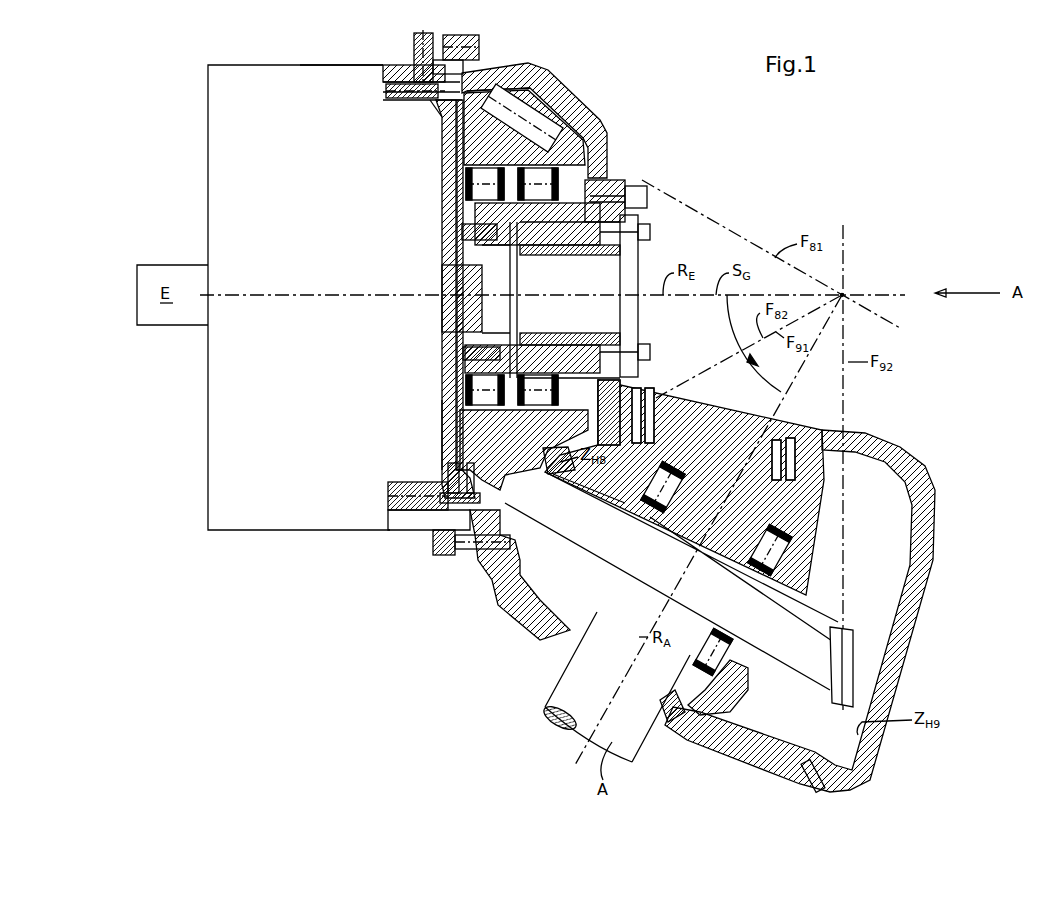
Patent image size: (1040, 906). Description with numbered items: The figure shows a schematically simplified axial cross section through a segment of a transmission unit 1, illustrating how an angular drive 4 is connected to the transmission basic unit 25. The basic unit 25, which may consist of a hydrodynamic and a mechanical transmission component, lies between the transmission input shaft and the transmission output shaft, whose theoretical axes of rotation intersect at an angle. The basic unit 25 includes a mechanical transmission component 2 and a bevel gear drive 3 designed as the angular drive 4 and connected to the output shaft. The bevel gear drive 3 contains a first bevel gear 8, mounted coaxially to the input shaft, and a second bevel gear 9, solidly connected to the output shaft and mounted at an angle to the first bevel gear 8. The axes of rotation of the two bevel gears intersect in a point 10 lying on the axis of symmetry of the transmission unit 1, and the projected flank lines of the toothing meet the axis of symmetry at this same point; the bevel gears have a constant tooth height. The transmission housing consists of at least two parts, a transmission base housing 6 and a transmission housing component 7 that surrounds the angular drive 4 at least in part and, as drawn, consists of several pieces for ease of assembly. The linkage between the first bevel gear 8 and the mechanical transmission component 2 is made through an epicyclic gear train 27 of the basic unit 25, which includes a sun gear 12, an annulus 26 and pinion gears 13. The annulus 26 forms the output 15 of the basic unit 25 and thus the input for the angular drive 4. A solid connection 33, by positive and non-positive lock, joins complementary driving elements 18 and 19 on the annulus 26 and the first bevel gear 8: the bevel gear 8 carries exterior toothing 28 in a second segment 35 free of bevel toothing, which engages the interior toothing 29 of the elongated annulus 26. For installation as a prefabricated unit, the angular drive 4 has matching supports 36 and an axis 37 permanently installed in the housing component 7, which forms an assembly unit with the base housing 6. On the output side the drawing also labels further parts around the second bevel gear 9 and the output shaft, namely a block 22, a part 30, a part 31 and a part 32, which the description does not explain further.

The transmission unit 1 is at (356, 63).
The mechanical transmission component 2 is at (285, 80).
The bevel gear drive 3 is at (605, 148).
The angular drive 4 is at (594, 104).
The transmission base housing 6 is at (411, 531).
The transmission housing component 7 is at (627, 182).
The first bevel gear 8 is at (535, 80).
The second bevel gear 9 is at (855, 630).
The point 10 is at (846, 294).
The sun gear 12 is at (441, 266).
The pinion gears 13 is at (445, 163).
The output 15 is at (386, 528).
The driving element 18 is at (395, 102).
The driving element 19 is at (438, 117).
The bearing block 22 is at (806, 514).
The transmission basic unit 25 is at (268, 256).
The annulus 26 is at (398, 95).
The epicyclic gear train 27 is at (441, 463).
The exterior toothing 28 is at (485, 68).
The interior toothing 29 is at (390, 494).
The bearing housing 30 is at (735, 688).
The roller bearing 31 is at (792, 560).
The roller bearing 32 is at (722, 650).
The solid connection 33 is at (452, 498).
The second segment 35 is at (457, 143).
The supports 36 is at (577, 178).
The axis 37 is at (632, 266).